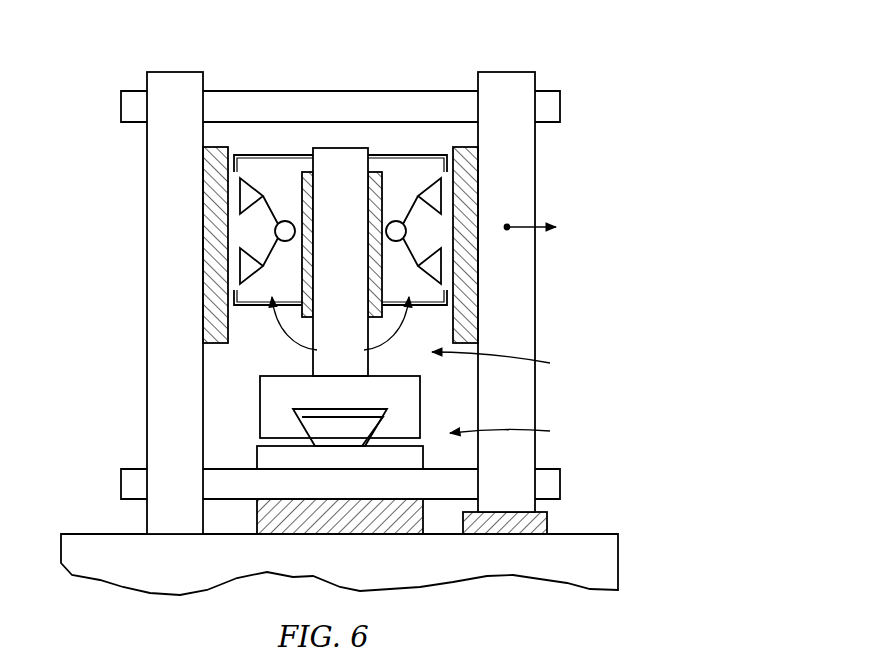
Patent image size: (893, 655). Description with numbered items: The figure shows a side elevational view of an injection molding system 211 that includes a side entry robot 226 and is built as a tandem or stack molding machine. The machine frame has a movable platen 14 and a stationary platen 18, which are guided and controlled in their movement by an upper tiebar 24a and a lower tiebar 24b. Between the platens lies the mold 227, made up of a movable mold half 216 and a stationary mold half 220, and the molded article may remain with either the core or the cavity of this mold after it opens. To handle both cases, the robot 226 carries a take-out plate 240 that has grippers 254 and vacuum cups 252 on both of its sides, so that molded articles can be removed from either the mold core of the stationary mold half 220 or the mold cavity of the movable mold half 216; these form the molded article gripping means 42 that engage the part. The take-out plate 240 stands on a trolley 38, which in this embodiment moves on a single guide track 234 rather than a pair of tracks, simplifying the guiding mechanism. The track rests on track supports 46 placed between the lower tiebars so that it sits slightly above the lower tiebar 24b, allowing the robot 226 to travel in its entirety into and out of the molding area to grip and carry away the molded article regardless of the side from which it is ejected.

The system 211 is at (386, 44).
The movable platen 14 is at (507, 87).
The stationary platen 18 is at (167, 185).
The upper tiebar 24a is at (121, 117).
The lower tiebar 24b is at (130, 480).
The trolley 38 is at (267, 399).
The molded article gripping means 42 is at (364, 350).
The track supports 46 is at (310, 522).
The movable mold half 216 is at (470, 158).
The stationary mold half 220 is at (210, 260).
The robot 226 is at (521, 435).
The mold 227 is at (512, 365).
The guide track 234 is at (357, 430).
The take-out plate 240 is at (347, 158).
The vacuum cups 252 is at (241, 204).
The grippers 254 is at (275, 155).